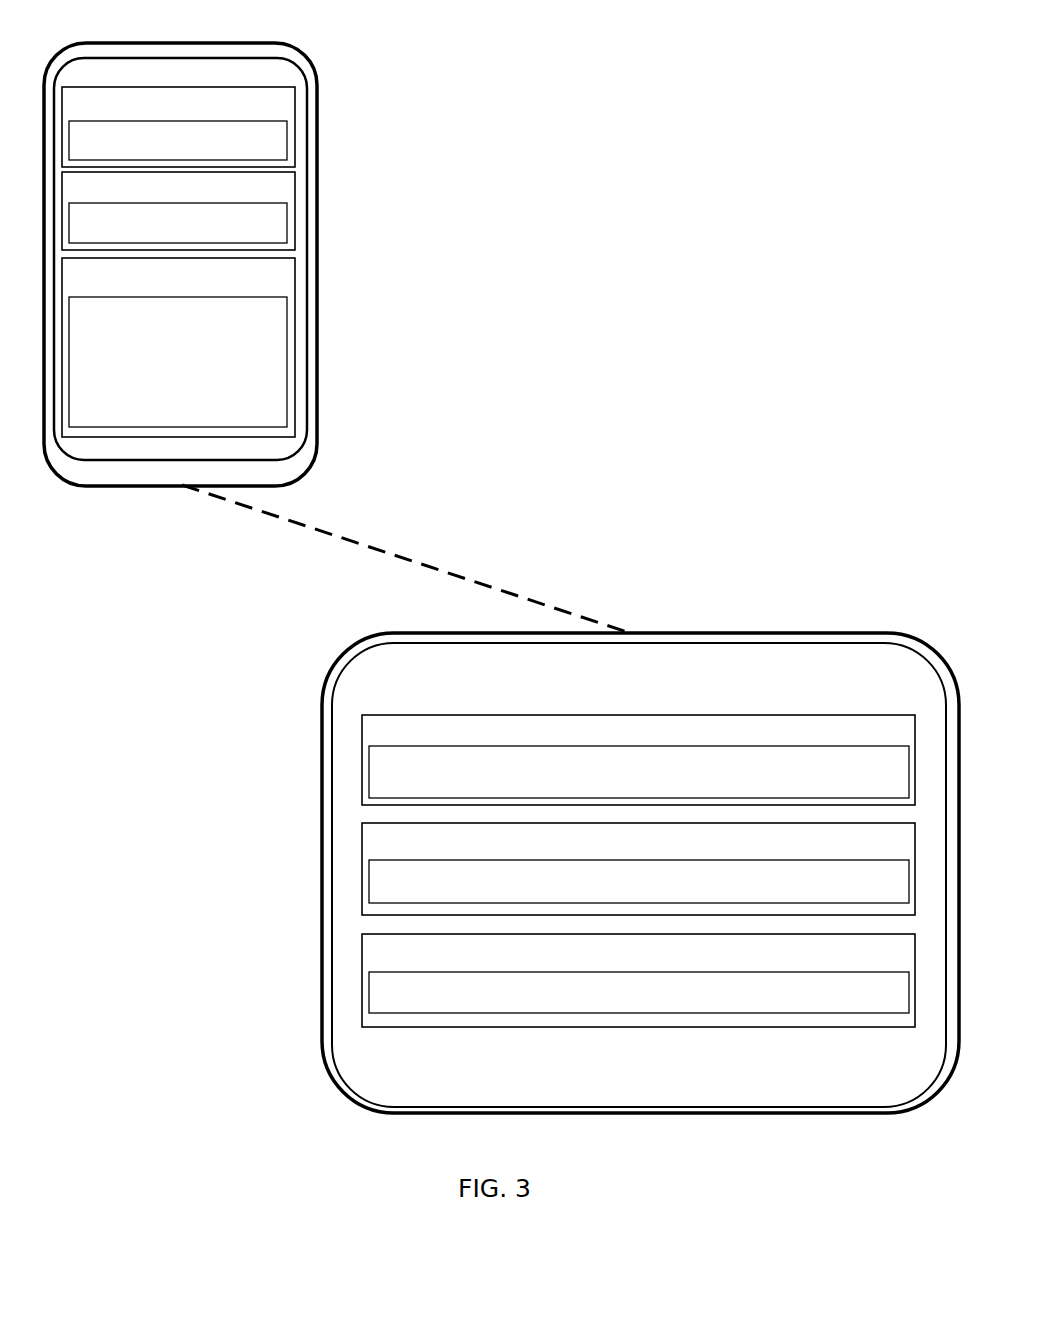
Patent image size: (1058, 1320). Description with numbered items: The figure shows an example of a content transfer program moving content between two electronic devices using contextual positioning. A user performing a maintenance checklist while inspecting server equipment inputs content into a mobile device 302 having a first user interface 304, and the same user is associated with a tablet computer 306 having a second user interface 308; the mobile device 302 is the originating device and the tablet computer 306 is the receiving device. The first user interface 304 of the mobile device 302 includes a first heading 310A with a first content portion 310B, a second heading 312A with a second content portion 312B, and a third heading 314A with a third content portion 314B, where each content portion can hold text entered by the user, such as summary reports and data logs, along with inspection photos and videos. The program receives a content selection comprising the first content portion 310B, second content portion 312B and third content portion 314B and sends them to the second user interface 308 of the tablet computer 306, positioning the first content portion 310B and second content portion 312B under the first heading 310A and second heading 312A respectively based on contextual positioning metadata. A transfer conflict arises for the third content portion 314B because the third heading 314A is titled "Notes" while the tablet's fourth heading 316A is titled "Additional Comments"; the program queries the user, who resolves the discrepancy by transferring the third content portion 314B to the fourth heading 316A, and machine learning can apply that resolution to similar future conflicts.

The mobile device 302 is at (193, 43).
The first user interface 304 is at (265, 62).
The tablet computer 306 is at (322, 683).
The second user interface 308 is at (332, 740).
The first heading 310A is at (488, 446).
The first content portion 310B is at (156, 152).
The second heading 312A is at (488, 543).
The second content portion 312B is at (156, 236).
The third heading 314A is at (178, 347).
The third content portion 314B is at (156, 372).
The fourth heading 316A is at (638, 980).